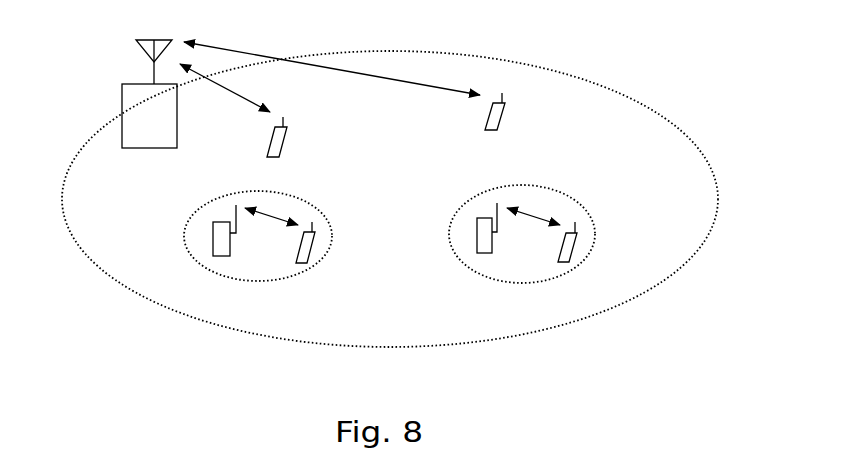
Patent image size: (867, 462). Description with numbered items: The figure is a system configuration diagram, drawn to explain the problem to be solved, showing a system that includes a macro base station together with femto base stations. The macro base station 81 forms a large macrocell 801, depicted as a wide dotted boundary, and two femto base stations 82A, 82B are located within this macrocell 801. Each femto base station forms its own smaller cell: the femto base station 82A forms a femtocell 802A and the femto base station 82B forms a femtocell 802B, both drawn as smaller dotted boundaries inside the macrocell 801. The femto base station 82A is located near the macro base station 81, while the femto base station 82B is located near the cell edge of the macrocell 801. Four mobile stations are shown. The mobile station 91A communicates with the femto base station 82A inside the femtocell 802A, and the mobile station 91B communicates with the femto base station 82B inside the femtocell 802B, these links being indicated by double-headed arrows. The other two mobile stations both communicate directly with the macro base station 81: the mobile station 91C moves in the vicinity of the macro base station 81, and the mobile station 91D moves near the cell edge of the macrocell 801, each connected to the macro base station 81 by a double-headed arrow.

The macro base station 81 is at (122, 86).
The macrocell 801 is at (514, 62).
The femtocell 802A is at (332, 243).
The femtocell 802B is at (595, 221).
The femto base station 82A is at (213, 238).
The femto base station 82B is at (477, 220).
The mobile station 91A is at (298, 265).
The mobile station 91B is at (558, 250).
The mobile station 91C is at (285, 142).
The mobile station 91D is at (500, 118).